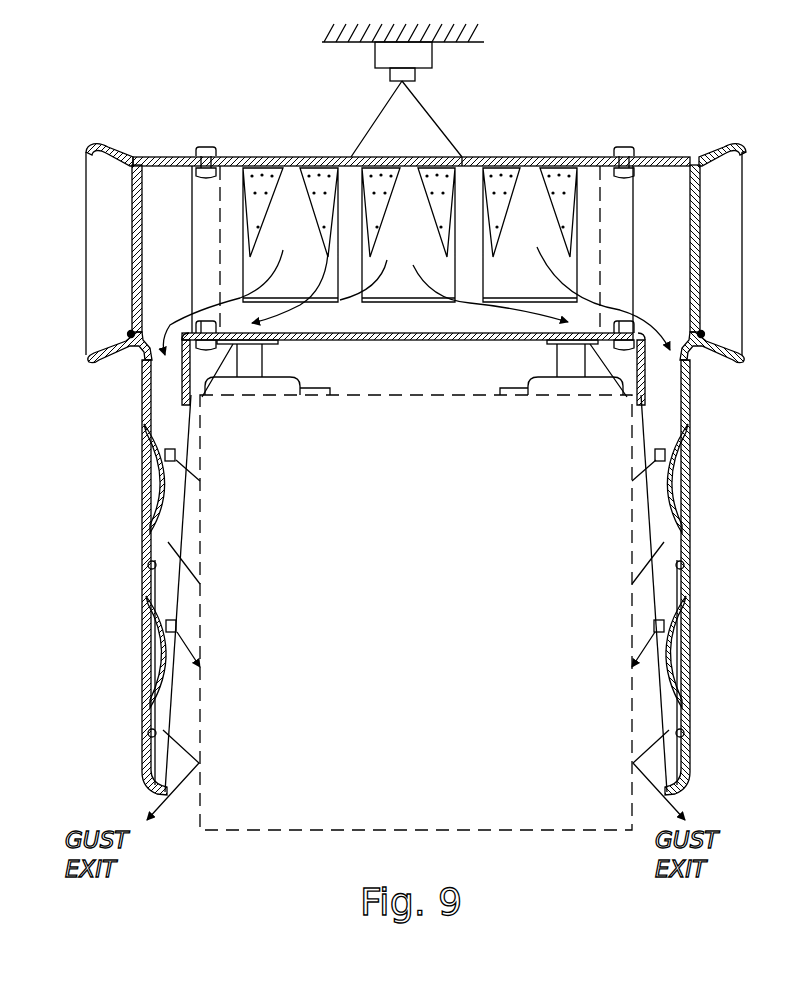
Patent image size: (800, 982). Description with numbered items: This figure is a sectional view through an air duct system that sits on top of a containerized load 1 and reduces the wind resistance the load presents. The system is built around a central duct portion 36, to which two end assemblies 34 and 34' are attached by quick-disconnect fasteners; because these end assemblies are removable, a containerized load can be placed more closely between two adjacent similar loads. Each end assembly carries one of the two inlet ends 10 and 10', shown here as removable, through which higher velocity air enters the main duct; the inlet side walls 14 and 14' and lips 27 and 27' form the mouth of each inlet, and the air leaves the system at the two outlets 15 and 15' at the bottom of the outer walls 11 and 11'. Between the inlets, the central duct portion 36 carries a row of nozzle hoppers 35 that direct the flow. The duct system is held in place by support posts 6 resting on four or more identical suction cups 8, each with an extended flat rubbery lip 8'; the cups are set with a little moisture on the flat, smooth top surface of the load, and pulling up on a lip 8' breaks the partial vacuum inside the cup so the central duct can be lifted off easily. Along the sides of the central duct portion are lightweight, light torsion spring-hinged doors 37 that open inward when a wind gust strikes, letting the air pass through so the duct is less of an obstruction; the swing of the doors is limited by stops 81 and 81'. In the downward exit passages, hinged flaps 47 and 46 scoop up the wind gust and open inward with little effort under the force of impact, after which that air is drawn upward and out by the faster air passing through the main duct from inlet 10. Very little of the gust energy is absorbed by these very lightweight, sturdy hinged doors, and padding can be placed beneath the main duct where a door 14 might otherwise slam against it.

The vehicle / truck body 1 is at (455, 392).
The support 6 is at (263, 358).
The suction cup 8 is at (414, 379).
The lip 8' is at (414, 381).
The inlet end 10 is at (65, 253).
The inlet end 10' is at (770, 253).
The side wall of exit duct 11 is at (130, 577).
The side wall of exit duct (right) 11' is at (696, 577).
The hinged door 14 is at (93, 248).
The inner shell wall (right) 14' is at (744, 248).
The outlet 15 is at (197, 593).
The outlet 15' is at (632, 593).
The lip flange 27 is at (102, 338).
The lip flange (right) 27' is at (733, 339).
The end assembly 34 is at (118, 138).
The end assembly 34' is at (717, 136).
The nozzle hopper 35 is at (312, 221).
The central duct portion 36 is at (272, 157).
The spring-hinged door 37 is at (457, 180).
The lower louver flap 46 is at (145, 644).
The upper louver flap 47 is at (145, 480).
The stop 81 is at (415, 454).
The stop 81' is at (415, 618).